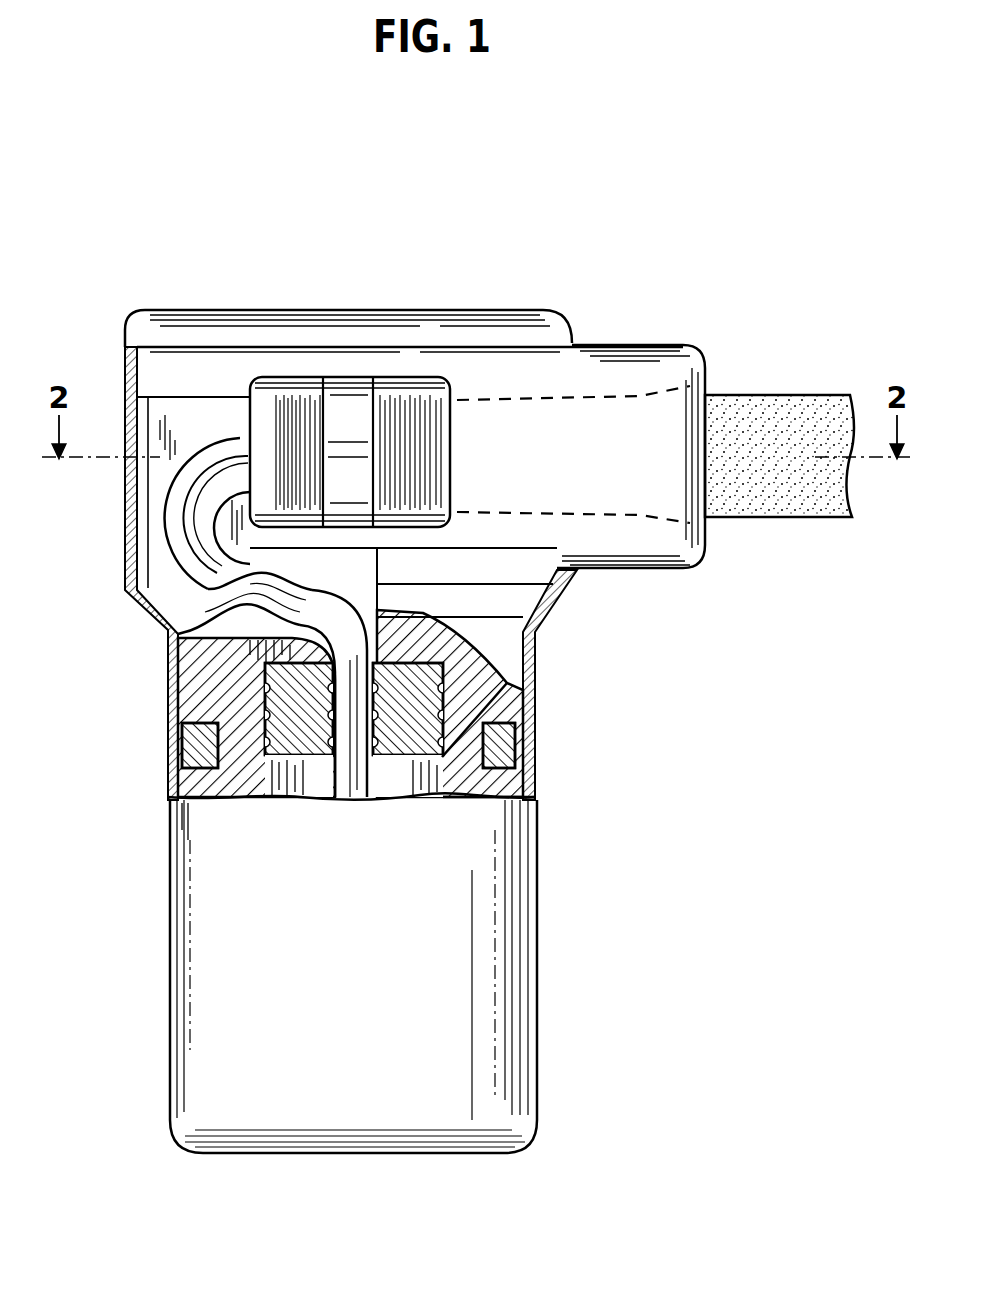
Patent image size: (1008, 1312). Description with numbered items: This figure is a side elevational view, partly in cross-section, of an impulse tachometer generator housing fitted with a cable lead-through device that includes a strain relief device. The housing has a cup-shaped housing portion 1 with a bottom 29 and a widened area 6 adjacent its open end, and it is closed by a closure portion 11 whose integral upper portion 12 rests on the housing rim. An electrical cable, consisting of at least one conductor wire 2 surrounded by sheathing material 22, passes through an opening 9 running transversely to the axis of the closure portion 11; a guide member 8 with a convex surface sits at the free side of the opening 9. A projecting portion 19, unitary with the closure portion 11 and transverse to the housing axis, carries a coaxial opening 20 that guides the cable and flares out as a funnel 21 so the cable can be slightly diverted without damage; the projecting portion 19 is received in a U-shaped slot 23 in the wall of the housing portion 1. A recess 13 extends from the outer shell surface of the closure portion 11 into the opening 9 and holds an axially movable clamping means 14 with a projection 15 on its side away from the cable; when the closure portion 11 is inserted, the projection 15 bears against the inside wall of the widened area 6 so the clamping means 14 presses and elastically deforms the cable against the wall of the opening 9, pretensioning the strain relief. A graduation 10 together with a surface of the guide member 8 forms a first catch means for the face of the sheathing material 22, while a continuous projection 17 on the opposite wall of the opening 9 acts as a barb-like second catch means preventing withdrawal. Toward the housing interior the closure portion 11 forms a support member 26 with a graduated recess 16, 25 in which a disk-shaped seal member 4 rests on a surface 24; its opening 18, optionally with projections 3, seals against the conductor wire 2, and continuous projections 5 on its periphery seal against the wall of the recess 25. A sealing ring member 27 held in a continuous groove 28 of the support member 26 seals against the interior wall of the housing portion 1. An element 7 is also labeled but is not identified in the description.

The cup-shaped housing portion 1 is at (170, 1030).
The conductor wire 2 is at (357, 793).
The projections 3 is at (320, 793).
The disk-shaped seal member 4 is at (285, 793).
The continuous projections 5 is at (250, 793).
The widened area 6 is at (128, 597).
The curved tube portion 7 is at (165, 580).
The guide member 8 is at (203, 518).
The opening 9 is at (163, 420).
The graduation 10 is at (250, 383).
The closure portion 11 is at (172, 367).
The upper portion 12 is at (192, 327).
The recess 13 is at (288, 378).
The clamping means 14 is at (308, 403).
The projection 15 is at (353, 413).
The graduated recess 16 is at (400, 620).
The continuous projection 17 is at (453, 400).
The opening 18 is at (367, 793).
The projecting portion 19 is at (527, 357).
The opening 20 is at (593, 393).
The funnel 21 is at (672, 387).
The sheathing material 22 is at (765, 402).
The U-shaped slot 23 is at (578, 572).
The surface 24 is at (515, 645).
The recess 25 is at (500, 686).
The support member 26 is at (470, 712).
The sealing ring member 27 is at (517, 747).
The continuous groove 28 is at (500, 802).
The bottom 29 is at (465, 1145).